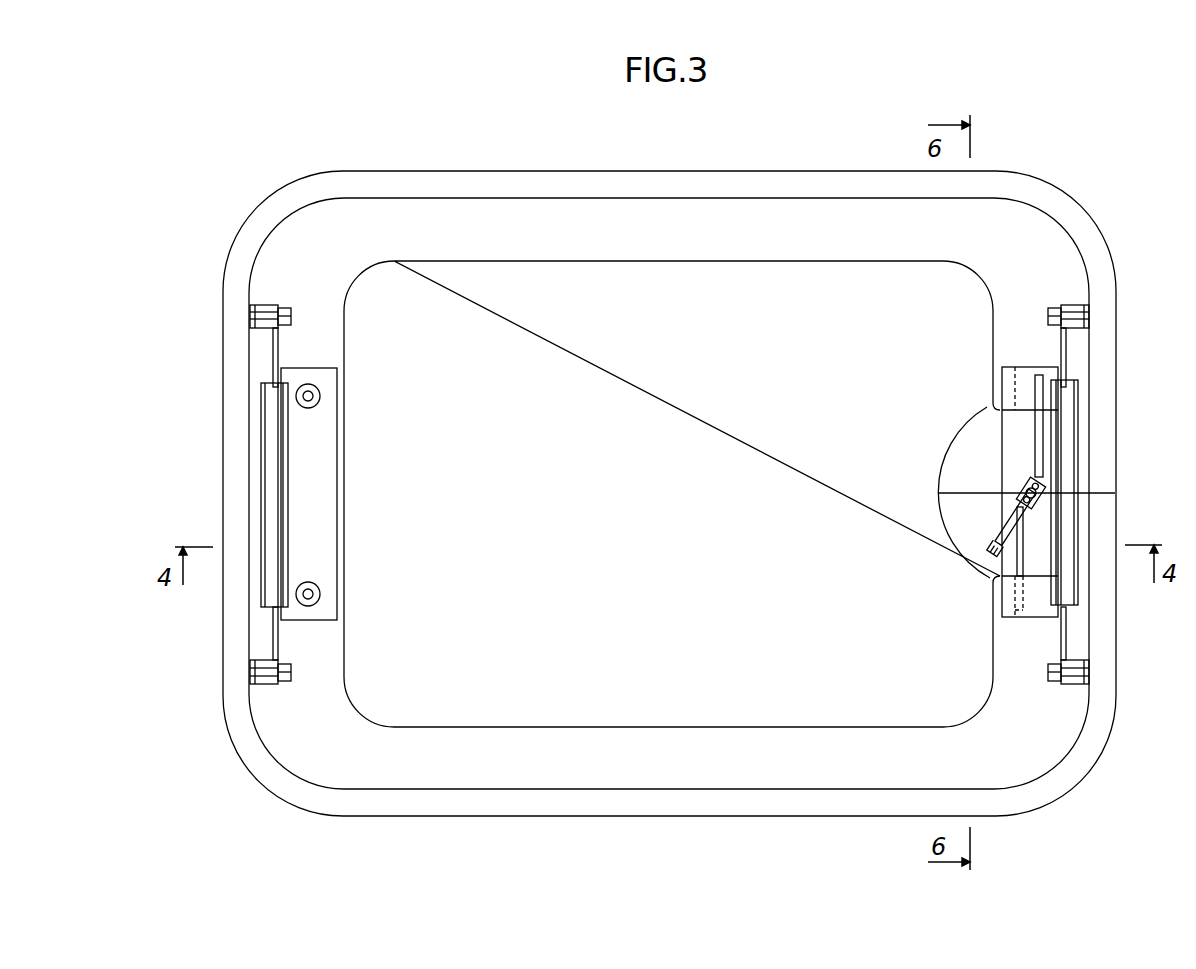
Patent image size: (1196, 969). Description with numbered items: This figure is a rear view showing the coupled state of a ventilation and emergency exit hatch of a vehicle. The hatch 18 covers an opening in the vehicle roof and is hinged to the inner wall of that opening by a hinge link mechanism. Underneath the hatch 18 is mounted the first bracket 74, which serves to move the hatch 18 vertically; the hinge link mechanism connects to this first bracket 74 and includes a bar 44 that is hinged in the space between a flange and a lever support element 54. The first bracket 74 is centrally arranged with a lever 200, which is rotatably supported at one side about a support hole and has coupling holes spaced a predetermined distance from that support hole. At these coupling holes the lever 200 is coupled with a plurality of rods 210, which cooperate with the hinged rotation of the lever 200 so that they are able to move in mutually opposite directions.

The hatch 18 is at (568, 604).
The bar 44 is at (273, 350).
The lever support element 54 is at (263, 305).
The first bracket 74 is at (320, 452).
The lever 200 is at (992, 546).
The rods 210 is at (1037, 448).